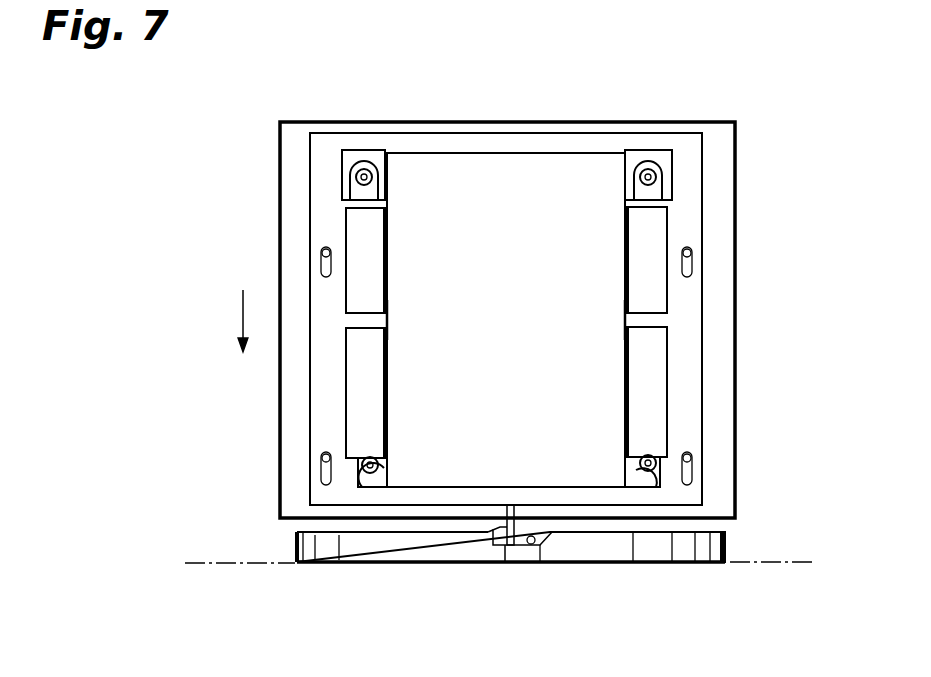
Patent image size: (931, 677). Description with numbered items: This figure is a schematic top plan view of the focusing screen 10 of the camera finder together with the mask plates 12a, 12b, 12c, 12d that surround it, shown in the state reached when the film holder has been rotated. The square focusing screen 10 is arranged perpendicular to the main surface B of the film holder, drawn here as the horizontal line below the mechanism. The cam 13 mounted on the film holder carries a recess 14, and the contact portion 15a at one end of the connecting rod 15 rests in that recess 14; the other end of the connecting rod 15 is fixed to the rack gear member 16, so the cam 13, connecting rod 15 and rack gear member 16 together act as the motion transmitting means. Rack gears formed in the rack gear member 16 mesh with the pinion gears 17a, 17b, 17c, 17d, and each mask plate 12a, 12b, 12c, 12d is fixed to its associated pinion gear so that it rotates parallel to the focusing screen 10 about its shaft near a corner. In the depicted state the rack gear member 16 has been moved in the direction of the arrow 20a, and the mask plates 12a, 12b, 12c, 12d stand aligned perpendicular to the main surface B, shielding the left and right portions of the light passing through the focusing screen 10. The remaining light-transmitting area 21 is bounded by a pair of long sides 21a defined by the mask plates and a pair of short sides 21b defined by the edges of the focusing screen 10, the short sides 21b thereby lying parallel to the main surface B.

The focusing screen 10 is at (573, 158).
The mask plate 12a is at (626, 262).
The mask plate 12b is at (626, 383).
The mask plate 12c is at (386, 392).
The mask plate 12d is at (386, 272).
The cam 13 is at (610, 564).
The recess 14 is at (535, 548).
The connecting rod 15 is at (483, 535).
The contact portion 15a is at (505, 547).
The rack gear member 16 is at (700, 337).
The pinion gear 17a is at (648, 157).
The pinion gear 17b is at (640, 465).
The pinion gear 17c is at (380, 470).
The pinion gear 17d is at (365, 157).
The arrow 20a is at (240, 321).
The light-transmitting area 21 is at (460, 157).
The long side 21a is at (388, 322).
The short side 21b is at (500, 158).
The main surface B is at (793, 565).